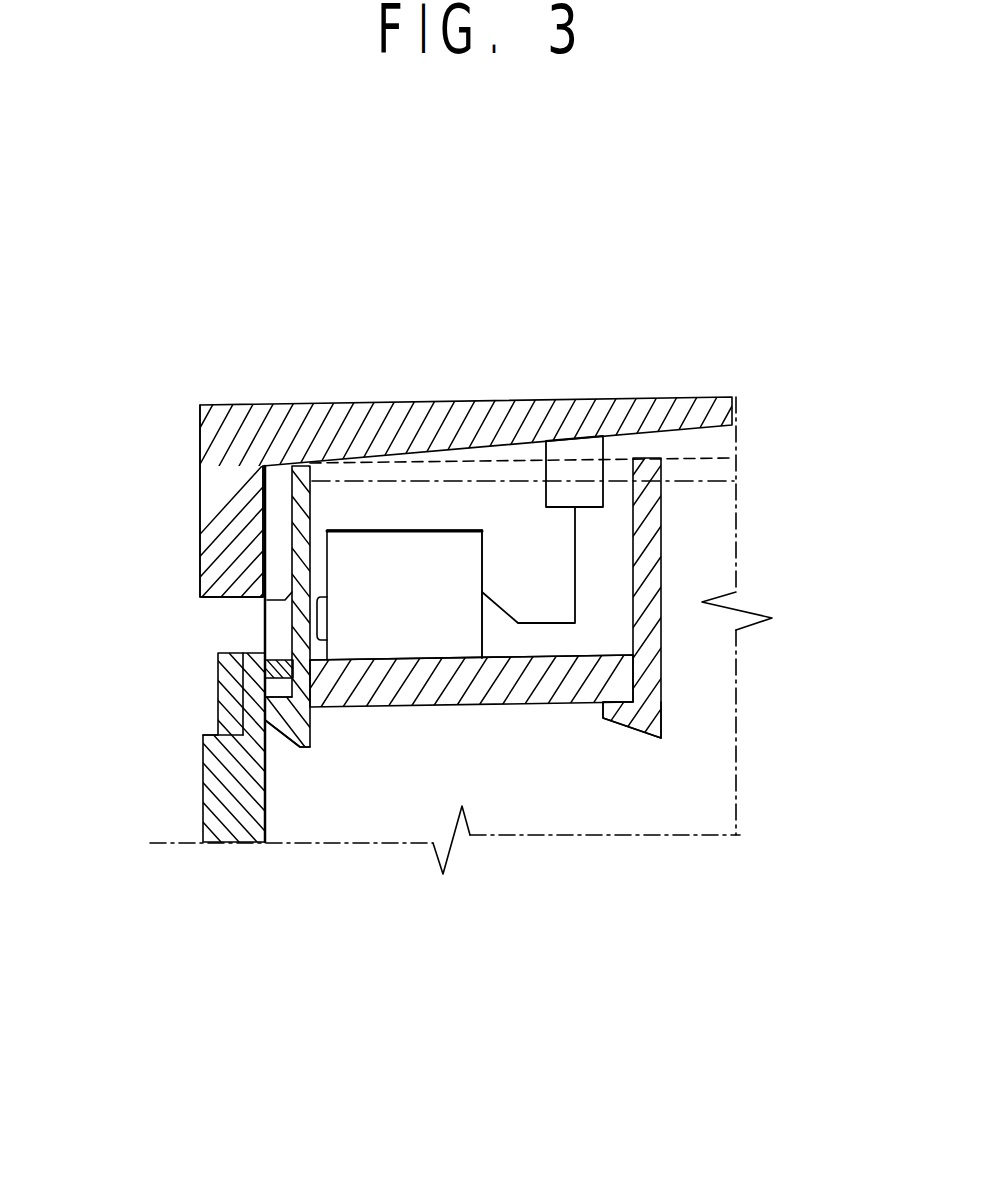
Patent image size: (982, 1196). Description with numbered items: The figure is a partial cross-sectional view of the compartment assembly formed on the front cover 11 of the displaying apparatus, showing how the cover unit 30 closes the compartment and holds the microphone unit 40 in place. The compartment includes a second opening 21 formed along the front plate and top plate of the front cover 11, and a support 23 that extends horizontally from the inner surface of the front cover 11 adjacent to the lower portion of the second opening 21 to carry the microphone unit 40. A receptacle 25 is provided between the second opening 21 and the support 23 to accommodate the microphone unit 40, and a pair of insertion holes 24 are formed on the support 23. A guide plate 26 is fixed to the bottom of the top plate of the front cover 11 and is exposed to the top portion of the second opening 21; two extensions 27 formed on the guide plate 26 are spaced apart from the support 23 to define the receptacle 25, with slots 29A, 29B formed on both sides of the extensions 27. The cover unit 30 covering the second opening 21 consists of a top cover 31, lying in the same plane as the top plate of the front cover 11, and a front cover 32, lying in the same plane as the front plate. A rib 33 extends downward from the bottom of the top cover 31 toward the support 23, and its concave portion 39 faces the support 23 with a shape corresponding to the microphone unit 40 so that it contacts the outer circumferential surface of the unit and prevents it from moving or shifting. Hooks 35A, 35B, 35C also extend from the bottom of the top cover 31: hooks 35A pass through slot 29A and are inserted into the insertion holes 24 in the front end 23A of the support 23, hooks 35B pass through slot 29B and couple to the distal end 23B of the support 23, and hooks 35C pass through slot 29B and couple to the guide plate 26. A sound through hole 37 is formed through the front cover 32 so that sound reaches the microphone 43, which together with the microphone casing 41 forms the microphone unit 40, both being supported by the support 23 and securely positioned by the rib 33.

The front cover 11 is at (217, 782).
The second opening 21 is at (274, 619).
The support 23 is at (577, 704).
The front end 23A is at (372, 692).
The distal end 23B is at (605, 677).
The insertion holes 24 is at (299, 678).
The receptacle 25 is at (318, 583).
The guide plate 26 is at (717, 468).
The extensions 27 is at (533, 470).
The slot 29A is at (325, 470).
The slot 29B is at (618, 472).
The cover unit 30 is at (168, 285).
The top cover 31 is at (294, 413).
The front cover 32 is at (200, 462).
The rib 33 is at (520, 540).
The hooks 35A is at (290, 762).
The hooks 35B is at (663, 737).
The hooks 35C is at (582, 492).
The sound through hole 37 is at (277, 618).
The concave portion 39 is at (482, 557).
The microphone unit 40 is at (380, 970).
The microphone casing 41 is at (405, 620).
The microphone 43 is at (336, 652).